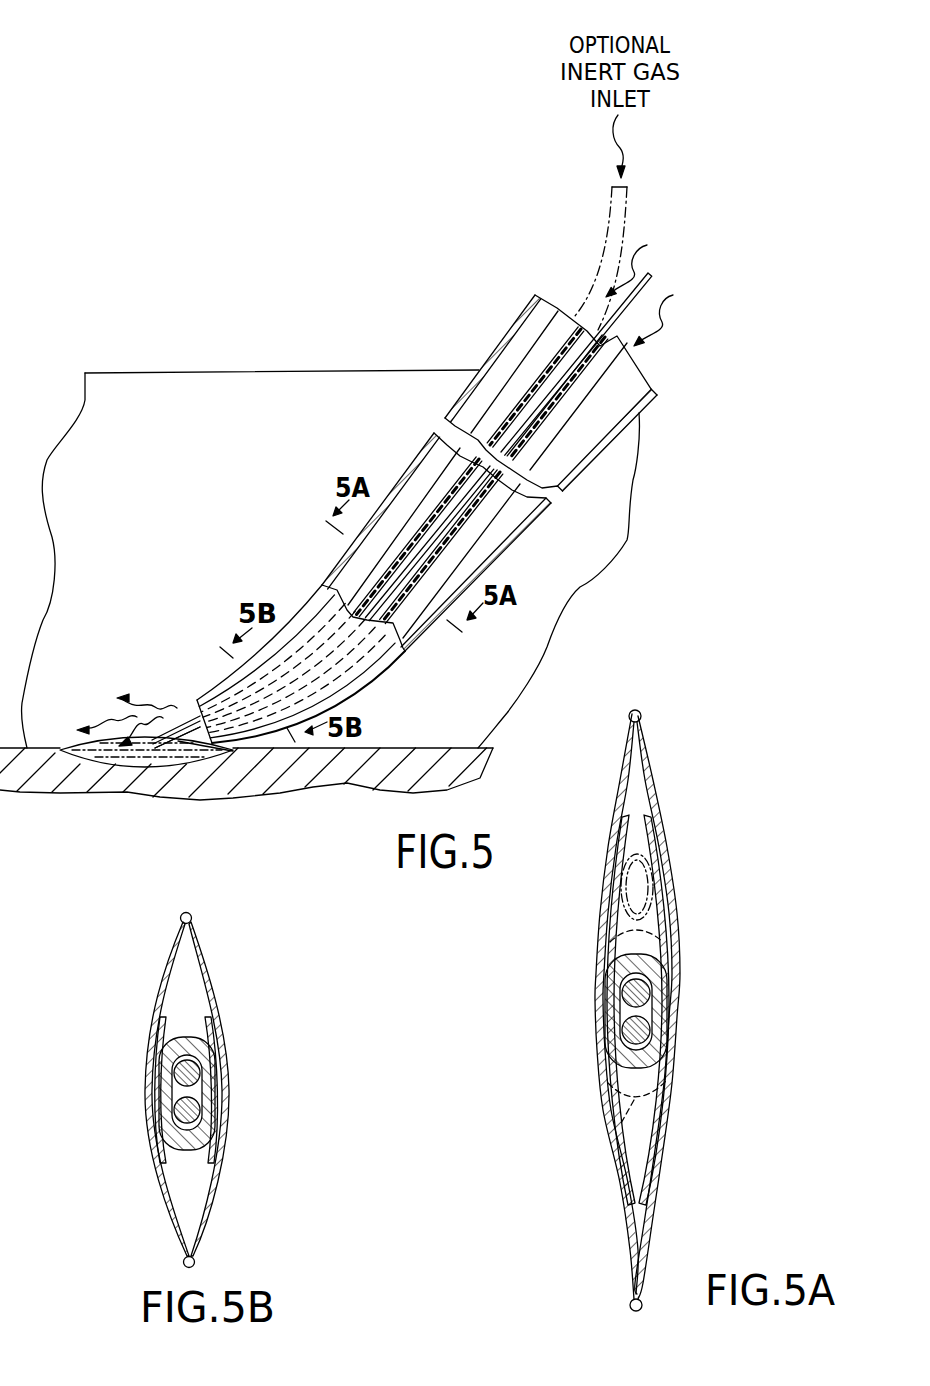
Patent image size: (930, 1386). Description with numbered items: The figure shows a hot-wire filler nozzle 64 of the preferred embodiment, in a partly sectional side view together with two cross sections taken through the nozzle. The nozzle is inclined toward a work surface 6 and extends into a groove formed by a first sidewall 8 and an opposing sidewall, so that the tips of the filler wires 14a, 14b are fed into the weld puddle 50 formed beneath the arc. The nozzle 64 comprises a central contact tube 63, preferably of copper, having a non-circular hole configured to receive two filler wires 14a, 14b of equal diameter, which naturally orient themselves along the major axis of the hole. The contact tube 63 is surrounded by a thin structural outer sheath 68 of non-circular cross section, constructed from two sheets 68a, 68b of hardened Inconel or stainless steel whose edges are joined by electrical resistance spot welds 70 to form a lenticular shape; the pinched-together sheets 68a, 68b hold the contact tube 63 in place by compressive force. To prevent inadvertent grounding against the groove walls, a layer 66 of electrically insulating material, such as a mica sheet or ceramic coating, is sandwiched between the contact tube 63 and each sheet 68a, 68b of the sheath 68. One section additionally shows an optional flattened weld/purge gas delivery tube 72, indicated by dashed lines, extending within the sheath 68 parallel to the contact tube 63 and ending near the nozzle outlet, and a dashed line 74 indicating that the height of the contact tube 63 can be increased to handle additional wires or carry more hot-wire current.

In FIG. 5, the work surface 6 is at (390, 748).
In FIG. 5, the first sidewall 8 is at (170, 474).
In FIG. 5, the filler wire 14a is at (197, 736).
In FIG. 5A, the filler wire 14a is at (630, 1000).
In FIG. 5B, the filler wire 14a is at (177, 1083).
In FIG. 5, the filler wire 14b is at (215, 762).
In FIG. 5A, the filler wire 14b is at (630, 1052).
In FIG. 5B, the filler wire 14b is at (168, 1137).
In FIG. 5, the weld puddle 50 is at (80, 744).
In FIG. 5, the central contact tube 63 is at (473, 508).
In FIG. 5A, the central contact tube 63 is at (640, 1065).
In FIG. 5B, the central contact tube 63 is at (195, 1155).
In FIG. 5, the hot-wire filler nozzle 64 is at (428, 651).
In FIG. 5, the layer of electrically insulating material 66 is at (580, 432).
In FIG. 5A, the layer of electrically insulating material 66 is at (620, 1150).
In FIG. 5B, the layer of electrically insulating material 66 is at (158, 1174).
In FIG. 5A, the outer sheath 68 is at (660, 1006).
In FIG. 5B, the outer sheath 68 is at (202, 1089).
In FIG. 5A, the sheet 68a is at (617, 803).
In FIG. 5B, the sheet 68a is at (160, 988).
In FIG. 5A, the sheet 68b is at (657, 780).
In FIG. 5B, the sheet 68b is at (203, 962).
In FIG. 5A, the spot welds 70 is at (637, 710).
In FIG. 5B, the spot welds 70 is at (188, 912).
In FIG. 5, the weld/purge gas delivery tube 72 is at (612, 210).
In FIG. 5A, the weld/purge gas delivery tube 72 is at (640, 850).
In FIG. 5A, the dashed line 74 is at (603, 1127).